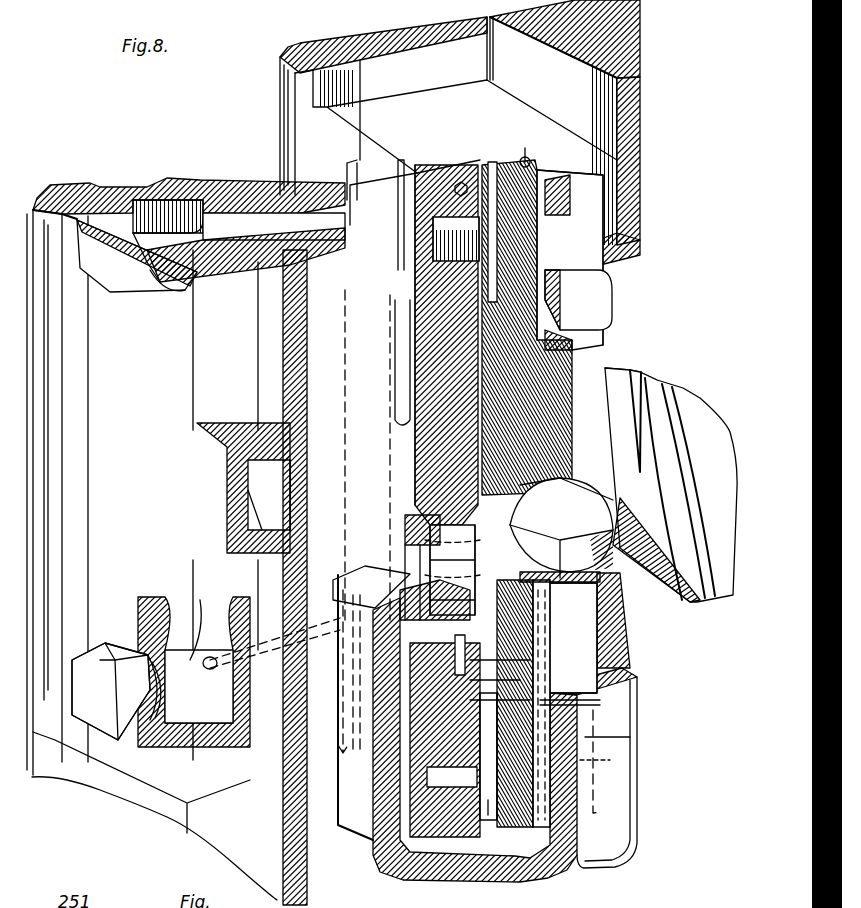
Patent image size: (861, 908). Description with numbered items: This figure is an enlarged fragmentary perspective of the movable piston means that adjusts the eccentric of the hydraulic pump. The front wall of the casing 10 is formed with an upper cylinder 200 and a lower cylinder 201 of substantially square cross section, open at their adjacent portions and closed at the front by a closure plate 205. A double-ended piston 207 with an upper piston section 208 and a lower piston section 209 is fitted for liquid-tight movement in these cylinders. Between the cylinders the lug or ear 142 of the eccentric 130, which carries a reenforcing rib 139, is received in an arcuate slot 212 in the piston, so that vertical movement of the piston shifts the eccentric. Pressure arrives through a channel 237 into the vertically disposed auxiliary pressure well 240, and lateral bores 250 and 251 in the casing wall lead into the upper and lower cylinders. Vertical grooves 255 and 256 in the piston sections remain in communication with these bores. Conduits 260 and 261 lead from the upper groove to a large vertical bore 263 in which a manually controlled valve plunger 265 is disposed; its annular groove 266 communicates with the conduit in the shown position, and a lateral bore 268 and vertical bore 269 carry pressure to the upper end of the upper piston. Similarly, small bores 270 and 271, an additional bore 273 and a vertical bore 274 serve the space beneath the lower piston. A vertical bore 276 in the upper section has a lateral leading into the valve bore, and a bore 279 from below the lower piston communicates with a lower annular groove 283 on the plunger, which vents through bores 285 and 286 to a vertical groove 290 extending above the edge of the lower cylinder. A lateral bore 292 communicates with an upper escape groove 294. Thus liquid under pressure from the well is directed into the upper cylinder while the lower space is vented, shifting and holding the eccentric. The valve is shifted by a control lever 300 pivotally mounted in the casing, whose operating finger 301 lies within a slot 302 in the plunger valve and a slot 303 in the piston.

The casing 10 is at (236, 212).
The eccentric 130 is at (720, 392).
The reenforcing rib 139 is at (615, 370).
The lug or ear 142 is at (595, 512).
The upper cylinder 200 is at (617, 57).
The lower cylinder 201 is at (615, 808).
The closure plate 205 is at (313, 62).
The double-ended piston 207 is at (408, 112).
The upper piston section 208 is at (340, 120).
The lower piston section 209 is at (585, 740).
The arcuate slot 212 is at (470, 640).
The channel 237 is at (250, 480).
The auxiliary pressure well 240 is at (160, 215).
The upper lateral bore 250 is at (345, 160).
The lower lateral bore 251 is at (225, 612).
The vertical groove 255 is at (355, 185).
The vertical groove 256 is at (395, 585).
The conduit 260 is at (390, 350).
The conduit 261 is at (380, 400).
The vertical bore 263 is at (480, 160).
The valve plunger 265 is at (495, 250).
The annular groove 266 is at (478, 235).
The lateral bore 268 is at (575, 345).
The vertical bore 269 is at (527, 165).
The small bore 270 is at (380, 600).
The small bore 271 is at (510, 660).
The additional bore 273 is at (505, 670).
The vertical bore 274 is at (585, 762).
The vertical bore 276 is at (525, 170).
The bore 279 is at (590, 720).
The annular groove 283 is at (500, 682).
The bore 285 is at (385, 800).
The bore 286 is at (400, 800).
The vertical groove 290 is at (410, 570).
The lateral bore 292 is at (420, 215).
The upper escape groove 294 is at (398, 410).
The control lever 300 is at (410, 525).
The operating finger 301 is at (480, 580).
The slot 302 is at (425, 510).
The slot 303 is at (470, 605).